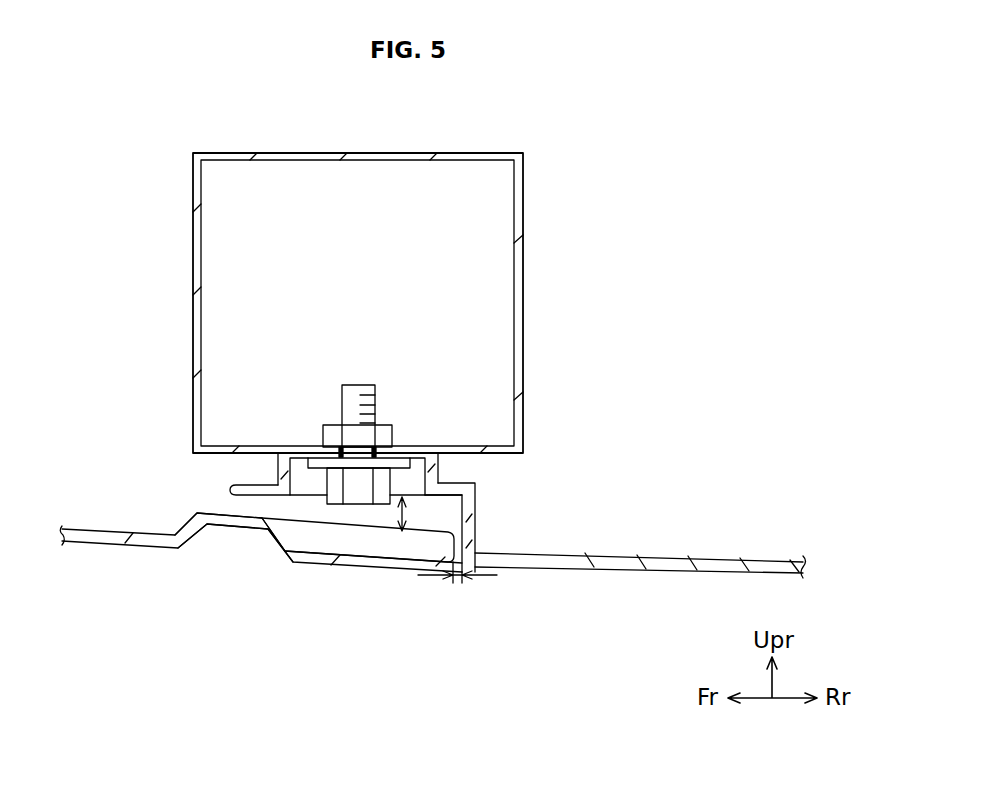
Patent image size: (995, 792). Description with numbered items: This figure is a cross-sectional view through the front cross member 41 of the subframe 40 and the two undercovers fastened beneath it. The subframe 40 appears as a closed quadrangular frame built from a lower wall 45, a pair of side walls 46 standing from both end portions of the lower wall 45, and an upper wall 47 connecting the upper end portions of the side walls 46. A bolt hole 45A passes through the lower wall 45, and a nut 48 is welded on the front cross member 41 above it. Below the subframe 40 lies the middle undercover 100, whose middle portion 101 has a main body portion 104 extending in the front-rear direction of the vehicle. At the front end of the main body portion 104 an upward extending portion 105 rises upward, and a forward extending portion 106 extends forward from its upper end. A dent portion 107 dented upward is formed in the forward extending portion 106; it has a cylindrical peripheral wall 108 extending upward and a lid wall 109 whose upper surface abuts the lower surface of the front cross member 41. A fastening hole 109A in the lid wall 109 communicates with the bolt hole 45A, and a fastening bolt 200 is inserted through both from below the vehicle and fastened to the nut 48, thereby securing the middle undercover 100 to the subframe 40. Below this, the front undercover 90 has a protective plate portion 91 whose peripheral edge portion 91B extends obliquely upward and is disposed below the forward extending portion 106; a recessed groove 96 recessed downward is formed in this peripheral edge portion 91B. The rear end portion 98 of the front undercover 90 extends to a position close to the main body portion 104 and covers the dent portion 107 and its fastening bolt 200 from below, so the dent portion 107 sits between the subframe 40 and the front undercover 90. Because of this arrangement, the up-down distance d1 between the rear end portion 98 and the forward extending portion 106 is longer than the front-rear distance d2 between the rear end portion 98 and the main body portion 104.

The subframe 40 is at (412, 271).
The front cross member 41 is at (412, 271).
The lower wall 45 is at (455, 450).
The bolt hole 45A is at (372, 448).
The side wall 46 is at (202, 268).
The upper wall 47 is at (320, 162).
The nut 48 is at (393, 432).
The fastening bolt 200 is at (374, 386).
The lid wall 109 is at (299, 456).
The fastening hole 109A is at (342, 452).
The peripheral wall 108 is at (440, 462).
The forward extending portion 106 is at (234, 500).
The upward extending portion 105 is at (477, 520).
The dent portion 107 is at (427, 507).
The front undercover 90 is at (261, 579).
The protective plate portion 91 is at (261, 579).
The rear end portion 98 is at (104, 541).
The peripheral edge portion 91B is at (216, 519).
The recessed groove 96 is at (317, 548).
The middle undercover 100 is at (640, 622).
The middle portion 101 is at (640, 622).
The main body portion 104 is at (620, 569).
The distance d1 is at (400, 521).
The distance d2 is at (462, 583).